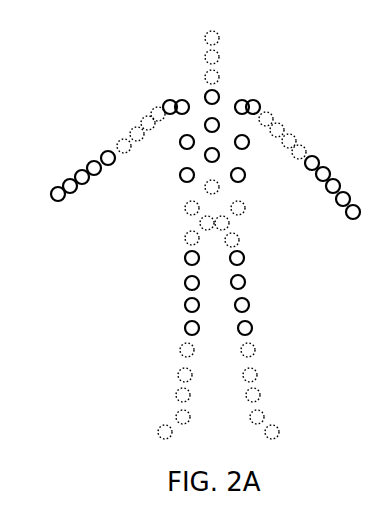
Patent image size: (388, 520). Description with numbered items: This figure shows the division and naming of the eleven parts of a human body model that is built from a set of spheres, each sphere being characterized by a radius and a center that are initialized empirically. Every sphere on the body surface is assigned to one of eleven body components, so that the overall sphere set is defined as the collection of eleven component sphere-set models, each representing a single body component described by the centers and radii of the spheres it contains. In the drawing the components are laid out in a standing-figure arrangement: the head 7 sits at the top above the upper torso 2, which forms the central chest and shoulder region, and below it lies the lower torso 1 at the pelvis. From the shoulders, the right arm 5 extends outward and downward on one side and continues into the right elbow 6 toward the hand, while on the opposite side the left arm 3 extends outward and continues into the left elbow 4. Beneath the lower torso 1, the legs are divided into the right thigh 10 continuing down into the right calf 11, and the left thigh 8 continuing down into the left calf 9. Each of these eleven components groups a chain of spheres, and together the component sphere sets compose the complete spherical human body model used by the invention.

The lower torso 1 is at (249, 213).
The upper torso 2 is at (183, 142).
The left arm 3 is at (281, 121).
The left elbow 4 is at (341, 177).
The right arm 5 is at (147, 116).
The right elbow 6 is at (78, 163).
The head 7 is at (243, 57).
The left thigh 8 is at (271, 293).
The left calf 9 is at (278, 391).
The right thigh 10 is at (154, 293).
The right calf 11 is at (153, 391).